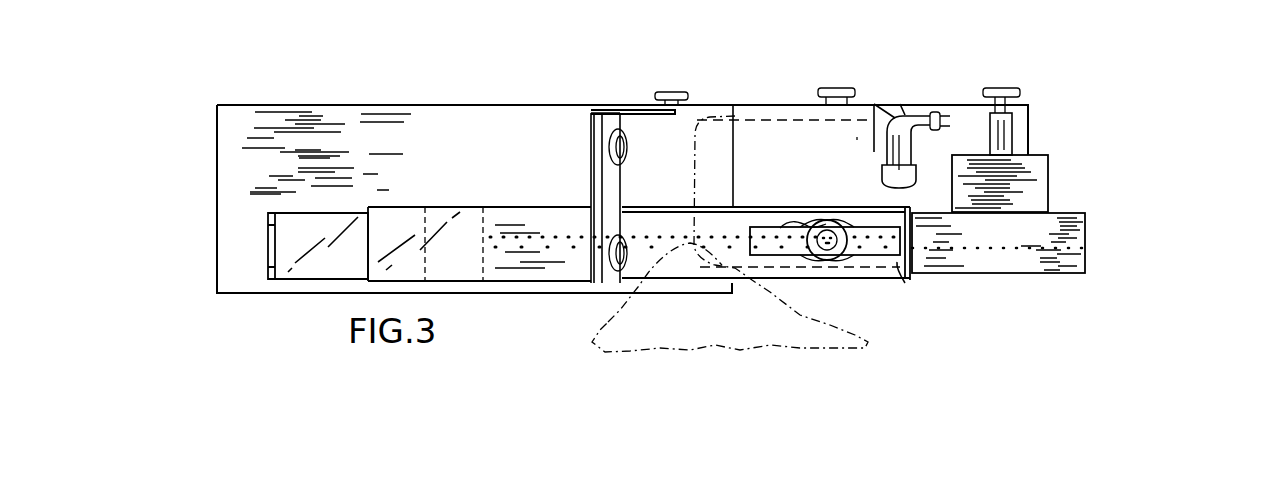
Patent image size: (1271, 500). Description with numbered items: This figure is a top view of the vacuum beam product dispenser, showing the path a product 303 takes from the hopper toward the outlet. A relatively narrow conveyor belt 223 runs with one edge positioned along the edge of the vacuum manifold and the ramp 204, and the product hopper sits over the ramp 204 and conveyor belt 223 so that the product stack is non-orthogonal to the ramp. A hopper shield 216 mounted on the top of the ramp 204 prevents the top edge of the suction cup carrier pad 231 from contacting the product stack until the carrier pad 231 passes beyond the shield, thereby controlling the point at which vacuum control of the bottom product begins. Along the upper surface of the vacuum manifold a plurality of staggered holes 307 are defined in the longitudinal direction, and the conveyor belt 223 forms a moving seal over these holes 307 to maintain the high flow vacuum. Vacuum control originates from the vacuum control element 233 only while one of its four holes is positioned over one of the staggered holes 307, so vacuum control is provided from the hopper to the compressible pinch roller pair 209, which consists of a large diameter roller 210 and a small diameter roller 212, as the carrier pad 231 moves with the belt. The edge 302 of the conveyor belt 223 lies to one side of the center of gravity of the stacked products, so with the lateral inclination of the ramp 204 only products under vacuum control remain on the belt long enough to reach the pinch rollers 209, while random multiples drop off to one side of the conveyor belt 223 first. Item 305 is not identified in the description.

The compressible pinch roller pair 209 is at (1147, 173).
The hopper shield 216 is at (316, 268).
The phantom cable outline 305 is at (655, 312).
The staggered holes 307 is at (867, 251).
The vacuum control element 233 is at (831, 220).
The suction cup carrier pad 231 is at (780, 228).
The product 303 is at (857, 137).
The ramp 204 is at (955, 135).
The small diameter roller 212 is at (1050, 178).
The large diameter roller 210 is at (1085, 233).
The conveyor belt 223 is at (930, 255).
The edge of the conveyor belt 302 is at (897, 262).